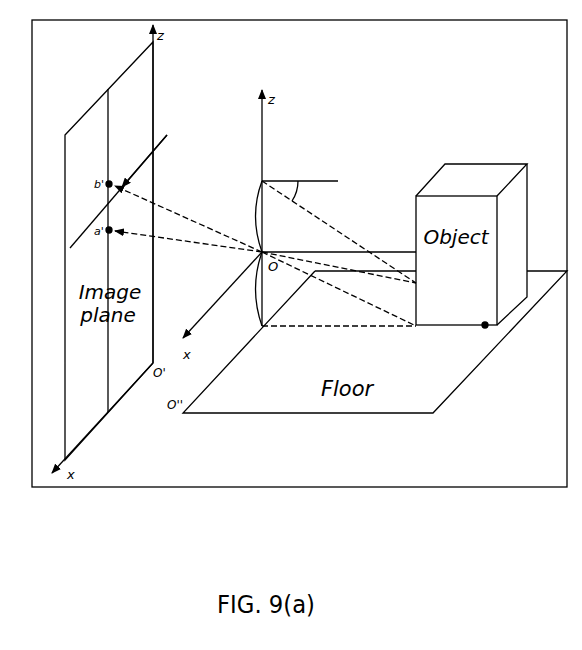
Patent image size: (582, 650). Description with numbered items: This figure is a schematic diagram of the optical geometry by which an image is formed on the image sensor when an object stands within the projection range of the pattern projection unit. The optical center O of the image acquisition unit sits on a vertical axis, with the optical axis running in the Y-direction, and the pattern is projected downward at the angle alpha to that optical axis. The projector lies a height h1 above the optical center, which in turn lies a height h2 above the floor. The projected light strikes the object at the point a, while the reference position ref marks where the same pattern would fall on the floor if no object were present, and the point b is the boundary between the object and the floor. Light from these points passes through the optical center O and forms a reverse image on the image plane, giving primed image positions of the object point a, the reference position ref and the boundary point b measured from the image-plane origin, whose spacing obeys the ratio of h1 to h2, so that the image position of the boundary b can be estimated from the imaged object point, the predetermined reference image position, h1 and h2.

The valid pattern position on object a is at (339, 274).
The boundary between object and floor b is at (338, 297).
The reference position ref is at (279, 229).
The height h1 is at (249, 216).
The height h2 is at (249, 289).
The angle alpha is at (339, 232).